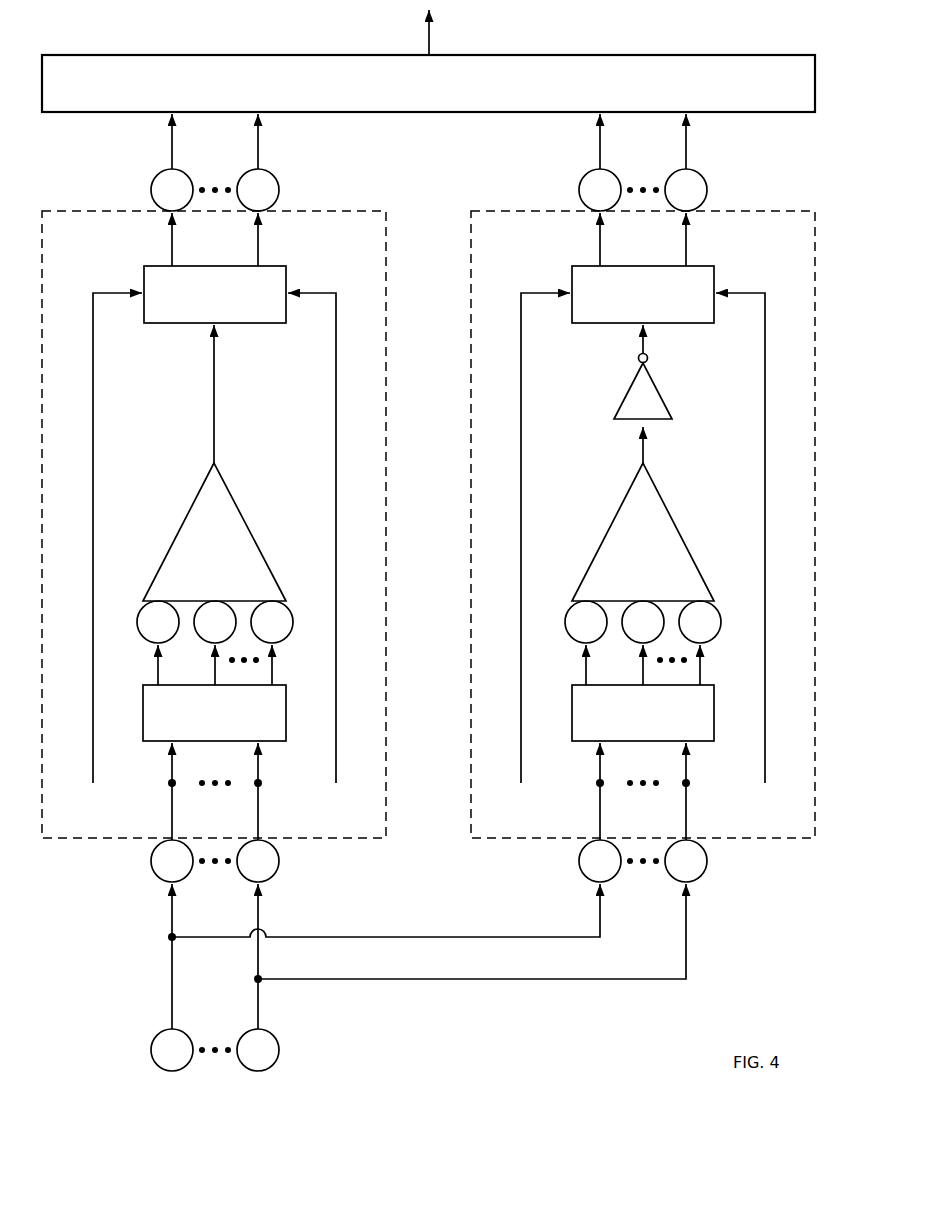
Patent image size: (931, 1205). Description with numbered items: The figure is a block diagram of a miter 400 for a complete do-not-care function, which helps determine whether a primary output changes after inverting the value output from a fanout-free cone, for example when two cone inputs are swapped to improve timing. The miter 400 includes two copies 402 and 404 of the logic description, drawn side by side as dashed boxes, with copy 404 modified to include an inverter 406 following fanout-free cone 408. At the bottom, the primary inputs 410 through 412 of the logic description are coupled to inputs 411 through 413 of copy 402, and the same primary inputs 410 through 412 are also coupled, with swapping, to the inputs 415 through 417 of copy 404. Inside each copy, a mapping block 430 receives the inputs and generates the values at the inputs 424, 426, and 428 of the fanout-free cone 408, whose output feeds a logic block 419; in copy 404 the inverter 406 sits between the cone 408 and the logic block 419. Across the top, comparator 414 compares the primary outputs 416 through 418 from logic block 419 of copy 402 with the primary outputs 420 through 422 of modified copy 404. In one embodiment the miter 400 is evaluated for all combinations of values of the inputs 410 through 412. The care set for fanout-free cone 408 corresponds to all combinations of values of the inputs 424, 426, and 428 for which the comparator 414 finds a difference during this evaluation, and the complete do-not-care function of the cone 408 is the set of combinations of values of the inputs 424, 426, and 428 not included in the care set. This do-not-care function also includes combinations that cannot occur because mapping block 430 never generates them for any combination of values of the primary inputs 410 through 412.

The miter 400 is at (130, 983).
The copy of the logic description 402 is at (68, 211).
The modified copy of the logic description 404 is at (496, 211).
The inverter 406 is at (627, 391).
The fanout-free cone 408 is at (171, 548).
The primary input 410 is at (151, 1050).
The input of copy 402 411 is at (151, 861).
The primary input 412 is at (279, 1050).
The input of copy 402 413 is at (279, 861).
The comparator 414 is at (68, 55).
The input of copy 404 415 is at (579, 861).
The primary output of copy 402 416 is at (151, 190).
The input of copy 404 417 is at (707, 861).
The primary output of copy 402 418 is at (279, 190).
The logic block 419 is at (226, 266).
The primary output of modified copy 404 420 is at (579, 190).
The primary output of modified copy 404 422 is at (707, 190).
The input of fanout-free cone 424 is at (139, 629).
The input of fanout-free cone 426 is at (196, 629).
The input of fanout-free cone 428 is at (291, 629).
The mapping block 430 is at (143, 720).